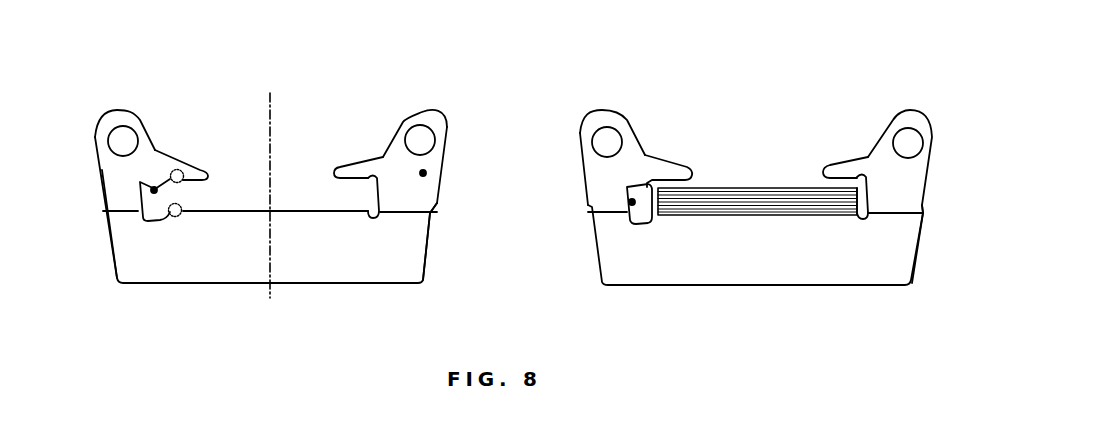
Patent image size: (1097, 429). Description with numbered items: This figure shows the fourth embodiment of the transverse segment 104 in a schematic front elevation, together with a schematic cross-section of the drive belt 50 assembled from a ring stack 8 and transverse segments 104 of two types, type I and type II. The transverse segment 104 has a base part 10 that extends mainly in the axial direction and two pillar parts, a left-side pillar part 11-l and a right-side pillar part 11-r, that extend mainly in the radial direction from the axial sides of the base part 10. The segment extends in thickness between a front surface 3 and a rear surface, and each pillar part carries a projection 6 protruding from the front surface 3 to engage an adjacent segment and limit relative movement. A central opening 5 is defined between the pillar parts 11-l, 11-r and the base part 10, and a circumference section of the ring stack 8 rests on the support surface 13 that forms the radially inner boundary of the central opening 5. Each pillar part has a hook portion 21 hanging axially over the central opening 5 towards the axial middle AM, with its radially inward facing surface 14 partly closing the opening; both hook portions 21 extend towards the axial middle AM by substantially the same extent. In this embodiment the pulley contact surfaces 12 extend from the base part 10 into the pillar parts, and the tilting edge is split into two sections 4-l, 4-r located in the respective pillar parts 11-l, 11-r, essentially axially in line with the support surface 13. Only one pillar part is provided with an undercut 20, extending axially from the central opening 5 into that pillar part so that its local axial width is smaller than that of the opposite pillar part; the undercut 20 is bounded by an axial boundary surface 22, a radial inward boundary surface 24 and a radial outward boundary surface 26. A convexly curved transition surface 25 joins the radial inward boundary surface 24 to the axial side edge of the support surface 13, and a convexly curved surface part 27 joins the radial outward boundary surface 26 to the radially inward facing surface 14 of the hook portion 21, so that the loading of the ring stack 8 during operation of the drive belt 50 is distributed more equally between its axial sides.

The axial middle AM is at (267, 182).
The transverse segment 104 is at (313, 284).
The central opening 5 is at (309, 206).
The left-side pillar part 11-l is at (107, 122).
The right-side pillar part 11-r is at (428, 122).
The projection 6 is at (124, 130).
The radially inward facing surface 14 is at (194, 170).
The hook portion 21 is at (210, 172).
The convexly curved surface part 27 is at (178, 167).
The convexly curved transition surface 25 is at (181, 204).
The axial boundary surface 22 is at (132, 197).
The undercut 20 is at (151, 190).
The radial outward boundary surface 26 is at (150, 170).
The pulley contact surface 12 is at (103, 246).
The left-side tilting edge section 4-l is at (122, 214).
The right-side tilting edge section 4-r is at (403, 214).
The radial inward boundary surface 24 is at (160, 230).
The support surface 13 is at (232, 222).
The front surface 3 is at (426, 173).
The base part 10 is at (422, 230).
The ring stack 8 is at (763, 188).
The drive belt 50 is at (791, 70).